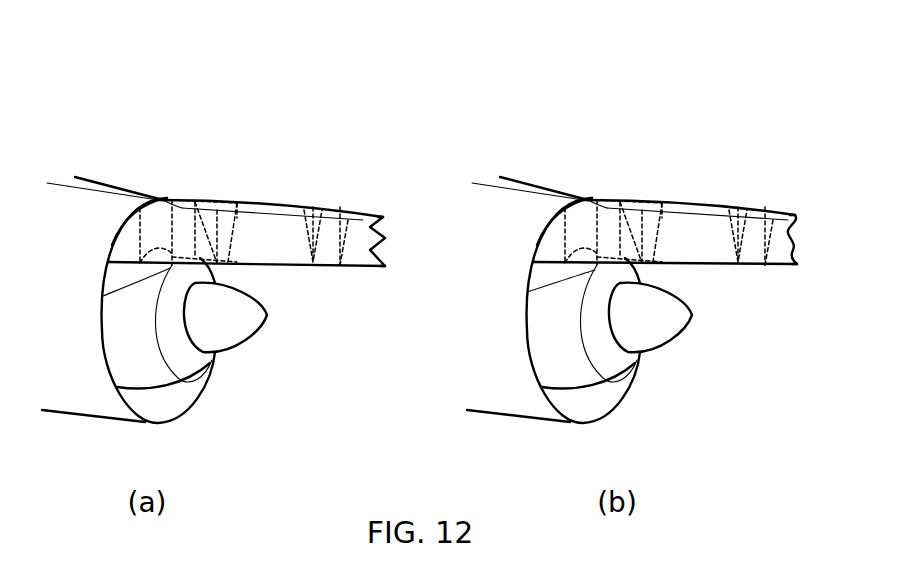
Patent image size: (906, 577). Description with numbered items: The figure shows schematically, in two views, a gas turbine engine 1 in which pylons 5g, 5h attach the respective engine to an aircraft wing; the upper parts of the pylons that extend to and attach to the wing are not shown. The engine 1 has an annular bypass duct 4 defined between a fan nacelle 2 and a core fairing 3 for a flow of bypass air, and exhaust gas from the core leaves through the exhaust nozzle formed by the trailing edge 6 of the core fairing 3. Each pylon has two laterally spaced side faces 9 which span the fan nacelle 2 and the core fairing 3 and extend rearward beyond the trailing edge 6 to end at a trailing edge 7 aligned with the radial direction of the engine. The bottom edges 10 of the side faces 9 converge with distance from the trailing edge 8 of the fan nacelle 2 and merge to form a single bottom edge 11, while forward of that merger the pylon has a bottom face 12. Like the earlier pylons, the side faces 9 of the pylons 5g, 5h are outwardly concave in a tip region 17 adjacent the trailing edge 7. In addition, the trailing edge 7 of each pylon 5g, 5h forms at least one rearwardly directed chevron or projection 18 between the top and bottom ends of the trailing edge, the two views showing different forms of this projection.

The gas turbine engine 1 is at (133, 162).
The fan nacelle 2 is at (75, 365).
The core fairing 3 is at (138, 372).
The annular bypass duct 4 is at (143, 331).
The pylon 5g is at (281, 169).
The pylon 5h is at (709, 169).
The trailing edge of the core fairing 6 is at (213, 357).
The trailing edge of the pylon 7 is at (387, 237).
The trailing edge of the fan nacelle 8 is at (118, 230).
The side faces 9 is at (285, 225).
The bottom edges 10 is at (188, 264).
The single bottom edge 11 is at (288, 268).
The bottom face of the pylon 12 is at (103, 296).
The tip region 17 is at (368, 216).
The chevron or projection 18 is at (387, 252).